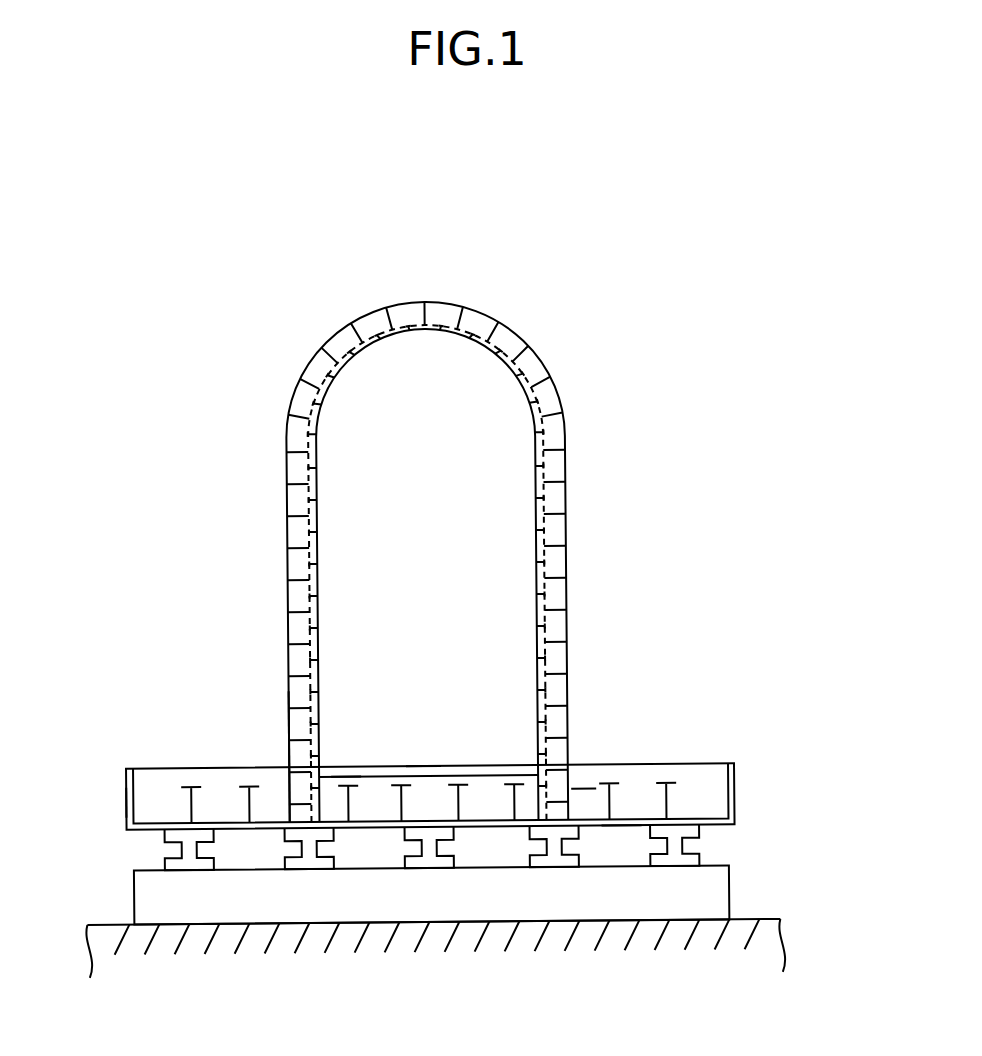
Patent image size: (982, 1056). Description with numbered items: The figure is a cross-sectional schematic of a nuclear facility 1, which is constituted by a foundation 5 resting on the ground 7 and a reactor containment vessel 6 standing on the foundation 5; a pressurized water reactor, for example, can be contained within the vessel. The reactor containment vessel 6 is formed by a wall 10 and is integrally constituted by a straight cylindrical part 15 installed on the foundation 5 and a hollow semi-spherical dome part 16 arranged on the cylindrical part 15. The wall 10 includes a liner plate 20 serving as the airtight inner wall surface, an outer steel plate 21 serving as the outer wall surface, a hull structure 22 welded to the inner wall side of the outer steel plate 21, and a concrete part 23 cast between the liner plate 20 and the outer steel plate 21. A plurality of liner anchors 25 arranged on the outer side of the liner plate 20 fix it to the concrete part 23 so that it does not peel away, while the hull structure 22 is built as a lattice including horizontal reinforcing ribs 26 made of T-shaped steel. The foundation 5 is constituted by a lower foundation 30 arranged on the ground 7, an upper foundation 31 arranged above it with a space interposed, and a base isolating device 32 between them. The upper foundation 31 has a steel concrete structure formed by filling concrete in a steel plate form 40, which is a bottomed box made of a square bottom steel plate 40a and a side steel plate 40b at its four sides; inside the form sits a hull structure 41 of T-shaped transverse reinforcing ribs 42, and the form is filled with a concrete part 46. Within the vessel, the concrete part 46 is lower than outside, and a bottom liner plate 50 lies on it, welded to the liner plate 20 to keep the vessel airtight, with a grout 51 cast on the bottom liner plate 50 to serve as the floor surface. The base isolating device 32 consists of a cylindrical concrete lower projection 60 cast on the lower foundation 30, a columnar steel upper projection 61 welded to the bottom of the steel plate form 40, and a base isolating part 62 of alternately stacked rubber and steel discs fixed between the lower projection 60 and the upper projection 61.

The nuclear facility 1 is at (588, 195).
The foundation 5 is at (868, 676).
The reactor containment vessel 6 is at (580, 466).
The ground 7 is at (435, 959).
The wall 10 is at (581, 586).
The cylindrical part 15 is at (288, 582).
The dome part 16 is at (407, 302).
The liner plate 20 is at (318, 482).
The outer steel plate 21 is at (288, 498).
The hull structure 22 is at (304, 565).
The concrete part 23 is at (297, 659).
The liner anchors 25 is at (405, 332).
The horizontal reinforcing ribs 26 is at (288, 708).
The lower foundation 30 is at (742, 874).
The upper foundation 31 is at (716, 750).
The base isolating device 32 is at (383, 923).
The steel plate form 40 is at (125, 784).
The bottom steel plate 40a is at (620, 822).
The side steel plate 40b is at (126, 801).
The hull structure 41 is at (690, 793).
The transverse reinforcing ribs 42 is at (243, 805).
The concrete part 46 is at (583, 783).
The bottom liner plate 50 is at (340, 775).
The grout 51 is at (420, 770).
The lower projection 60 is at (403, 870).
The upper projection 61 is at (283, 838).
The base isolating part 62 is at (550, 848).